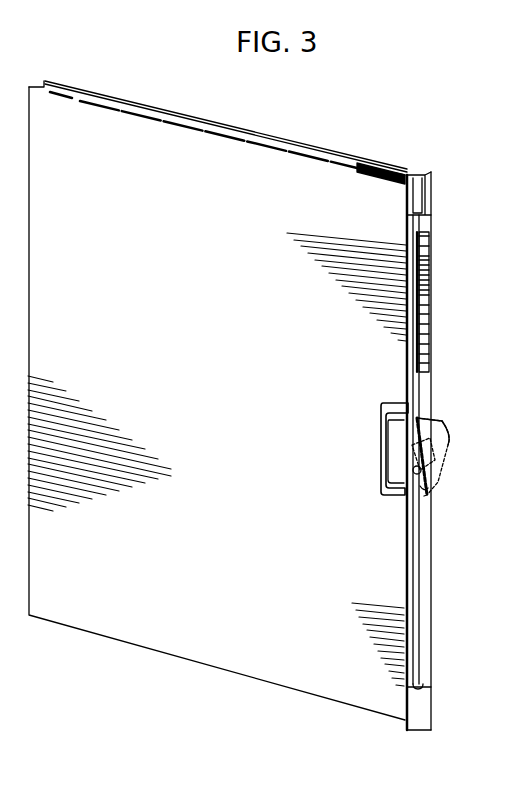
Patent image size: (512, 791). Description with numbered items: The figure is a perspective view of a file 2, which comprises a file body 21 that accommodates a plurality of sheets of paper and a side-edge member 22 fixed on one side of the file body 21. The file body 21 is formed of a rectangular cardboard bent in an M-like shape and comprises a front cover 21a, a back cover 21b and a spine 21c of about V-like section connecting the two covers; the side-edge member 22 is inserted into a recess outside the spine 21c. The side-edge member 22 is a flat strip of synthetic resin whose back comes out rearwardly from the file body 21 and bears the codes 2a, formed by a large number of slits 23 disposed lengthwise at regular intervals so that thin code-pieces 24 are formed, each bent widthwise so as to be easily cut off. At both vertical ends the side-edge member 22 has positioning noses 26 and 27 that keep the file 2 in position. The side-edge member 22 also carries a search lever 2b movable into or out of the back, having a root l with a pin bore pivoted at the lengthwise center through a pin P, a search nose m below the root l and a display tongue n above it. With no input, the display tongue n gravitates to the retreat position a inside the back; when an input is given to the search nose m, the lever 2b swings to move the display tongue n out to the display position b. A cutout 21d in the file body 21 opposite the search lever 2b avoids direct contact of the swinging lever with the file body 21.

The file 2 is at (198, 120).
The file body 21 is at (287, 142).
The front cover 21a is at (312, 172).
The back cover 21b is at (246, 134).
The spine 21c is at (400, 170).
The cutout 21d is at (383, 497).
The side-edge member 22 is at (433, 207).
The slits 23 is at (430, 272).
The code-pieces 24 is at (430, 292).
The positioning nose 26 is at (428, 177).
The positioning nose 27 is at (409, 728).
The codes 2a is at (430, 248).
The search lever 2b is at (430, 462).
The display tongue n is at (432, 424).
The retreat position a is at (420, 440).
The display position b is at (446, 448).
The pin P is at (422, 472).
The root l is at (428, 488).
The search nose m is at (424, 496).